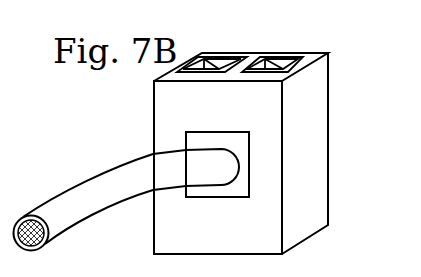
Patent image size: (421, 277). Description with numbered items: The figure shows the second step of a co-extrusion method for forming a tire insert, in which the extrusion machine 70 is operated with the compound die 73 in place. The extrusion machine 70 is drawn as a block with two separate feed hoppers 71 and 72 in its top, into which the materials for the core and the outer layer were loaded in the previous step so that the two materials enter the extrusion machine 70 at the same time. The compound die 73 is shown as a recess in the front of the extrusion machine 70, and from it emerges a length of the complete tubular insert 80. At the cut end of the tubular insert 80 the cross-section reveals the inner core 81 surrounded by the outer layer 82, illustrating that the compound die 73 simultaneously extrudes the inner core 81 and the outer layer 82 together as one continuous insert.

The extrusion machine 70 is at (318, 86).
The feed hopper 71 is at (223, 65).
The feed hopper 72 is at (287, 65).
The compound die 73 is at (240, 152).
The tubular insert 80 is at (115, 190).
The inner core 81 is at (22, 218).
The outer layer 82 is at (50, 197).